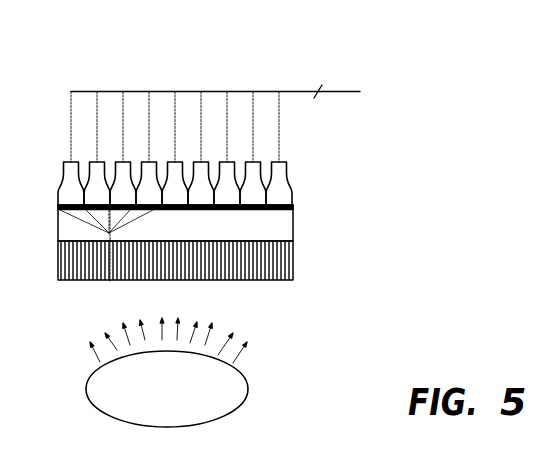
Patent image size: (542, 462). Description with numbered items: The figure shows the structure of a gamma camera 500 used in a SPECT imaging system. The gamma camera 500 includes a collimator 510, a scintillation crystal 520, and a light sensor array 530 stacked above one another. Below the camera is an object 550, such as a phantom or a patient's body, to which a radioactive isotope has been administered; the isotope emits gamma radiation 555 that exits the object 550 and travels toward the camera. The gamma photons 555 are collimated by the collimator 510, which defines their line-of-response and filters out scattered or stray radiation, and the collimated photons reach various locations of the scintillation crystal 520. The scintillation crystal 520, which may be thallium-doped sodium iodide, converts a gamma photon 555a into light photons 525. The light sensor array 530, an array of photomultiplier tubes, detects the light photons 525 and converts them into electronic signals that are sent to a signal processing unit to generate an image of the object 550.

The gamma camera 500 is at (63, 54).
The collimator 510 is at (294, 268).
The scintillation crystal 520 is at (294, 225).
The light photons 525 is at (131, 222).
The light sensor array 530 is at (43, 190).
The object 550 is at (249, 392).
The gamma radiation 555 is at (81, 356).
The gamma photon 555a is at (110, 281).